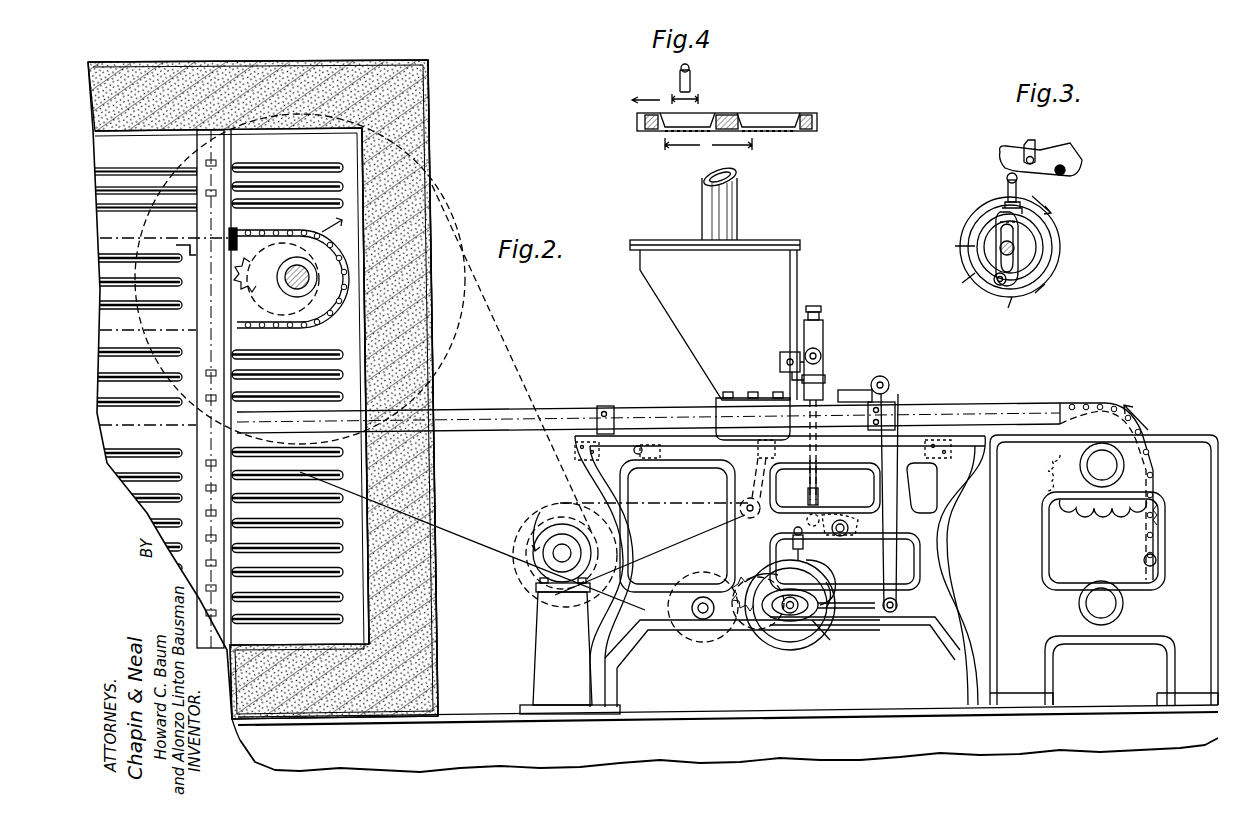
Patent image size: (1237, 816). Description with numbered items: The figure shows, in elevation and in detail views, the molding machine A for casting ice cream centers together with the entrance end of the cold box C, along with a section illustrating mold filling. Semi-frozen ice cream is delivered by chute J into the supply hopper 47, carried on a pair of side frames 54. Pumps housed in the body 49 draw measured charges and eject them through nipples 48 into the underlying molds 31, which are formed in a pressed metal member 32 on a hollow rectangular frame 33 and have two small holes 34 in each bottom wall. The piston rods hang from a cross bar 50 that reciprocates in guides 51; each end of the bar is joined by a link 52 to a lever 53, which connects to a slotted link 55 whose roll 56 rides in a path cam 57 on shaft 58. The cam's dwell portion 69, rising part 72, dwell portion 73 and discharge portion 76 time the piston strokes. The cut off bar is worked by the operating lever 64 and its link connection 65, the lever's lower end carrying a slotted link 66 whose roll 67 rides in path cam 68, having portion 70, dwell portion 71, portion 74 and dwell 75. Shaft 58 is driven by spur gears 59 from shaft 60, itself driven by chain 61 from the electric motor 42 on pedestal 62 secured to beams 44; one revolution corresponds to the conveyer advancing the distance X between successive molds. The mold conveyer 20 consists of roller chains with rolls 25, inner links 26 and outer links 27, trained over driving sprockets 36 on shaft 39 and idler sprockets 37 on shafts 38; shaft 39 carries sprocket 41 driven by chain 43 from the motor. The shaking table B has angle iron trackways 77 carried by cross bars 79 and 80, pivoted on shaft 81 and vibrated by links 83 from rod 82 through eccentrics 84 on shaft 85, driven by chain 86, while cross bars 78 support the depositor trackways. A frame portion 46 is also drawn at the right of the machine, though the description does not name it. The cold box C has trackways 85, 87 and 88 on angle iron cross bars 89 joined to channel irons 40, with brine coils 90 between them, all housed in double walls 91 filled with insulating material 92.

In FIG. 2, the mold conveyer 20 is at (325, 318).
In FIG. 2, the rolls of the chains 25 is at (1140, 545).
In FIG. 2, the pairs of inner links 26 is at (1156, 556).
In FIG. 2, the pairs of outer links 27 is at (1157, 536).
In FIG. 4, the molds 31 is at (708, 112).
In FIG. 4, the pressed metal member 32 is at (652, 133).
In FIG. 4, the hollow rectangular frame 33 is at (812, 118).
In FIG. 4, the small holes 34 is at (662, 141).
In FIG. 2, the driving sprocket 36 is at (276, 282).
In FIG. 2, the idler sprockets 37 is at (1106, 515).
In FIG. 2, the shafts 38 is at (1102, 465).
In FIG. 2, the shaft 39 is at (298, 276).
In FIG. 2, the upstanding channel irons 40 is at (246, 636).
In FIG. 2, the sprocket 41 is at (461, 342).
In FIG. 2, the electric motor 42 is at (565, 566).
In FIG. 2, the chain 43 is at (508, 330).
In FIG. 2, the beams 44 is at (725, 738).
In FIG. 2, the right frame 46 is at (1104, 570).
In FIG. 2, the supply hopper 47 is at (715, 320).
In FIG. 4, the nipples 48 is at (690, 74).
In FIG. 2, the body 49 is at (822, 372).
In FIG. 2, the cross bar 50 is at (823, 334).
In FIG. 2, the guides 51 is at (823, 348).
In FIG. 2, the link 52 is at (818, 478).
In FIG. 3, the link 52 is at (1027, 140).
In FIG. 2, the lever 53 is at (848, 512).
In FIG. 3, the lever 53 is at (1055, 150).
In FIG. 2, the side frames 54 is at (945, 532).
In FIG. 2, the link 55 is at (804, 548).
In FIG. 3, the link 55 is at (1005, 196).
In FIG. 3, the roll 56 is at (1000, 298).
In FIG. 3, the path cam 57 is at (1040, 275).
In FIG. 2, the shaft 58 is at (775, 645).
In FIG. 3, the shaft 58 is at (1002, 248).
In FIG. 2, the spur gears 59 is at (746, 642).
In FIG. 2, the shaft 60 is at (703, 644).
In FIG. 2, the chain 61 is at (640, 642).
In FIG. 2, the pedestal 62 is at (570, 646).
In FIG. 2, the operating lever 64 is at (900, 478).
In FIG. 2, the link connection 65 is at (862, 392).
In FIG. 2, the link 66 is at (880, 624).
In FIG. 2, the roll 67 is at (830, 606).
In FIG. 2, the path cam 68 is at (790, 642).
In FIG. 3, the dwell portion 69 is at (1058, 220).
In FIG. 2, the portion of cam 70 is at (808, 562).
In FIG. 2, the dwell portion 71 is at (757, 572).
In FIG. 3, the part of cam 72 is at (970, 208).
In FIG. 3, the dwell portion 73 is at (960, 270).
In FIG. 2, the portion of cam 74 is at (838, 628).
In FIG. 2, the dwell 75 is at (832, 584).
In FIG. 3, the portion of cam 76 is at (1028, 296).
In FIG. 2, the angle iron trackways 77 is at (664, 408).
In FIG. 2, the cross bars 78 is at (736, 450).
In FIG. 2, the cross bar 79 is at (681, 453).
In FIG. 2, the cross bar 80 is at (772, 450).
In FIG. 2, the shaft 81 is at (643, 451).
In FIG. 2, the rod 82 is at (757, 450).
In FIG. 2, the links 83 is at (751, 478).
In FIG. 2, the eccentrics 84 is at (750, 525).
In FIG. 2, the shaft 85 is at (470, 408).
In FIG. 2, the chain 86 is at (606, 406).
In FIG. 2, the trackways 87 is at (186, 324).
In FIG. 2, the trackways 88 is at (102, 238).
In FIG. 2, the angle iron cross bars 89 is at (219, 249).
In FIG. 2, the brine coils 90 is at (328, 186).
In FIG. 2, the double walls 91 is at (428, 62).
In FIG. 2, the insulating material 92 is at (428, 105).
In FIG. 2, the molding machine A is at (838, 301).
In FIG. 2, the shaking table B is at (687, 396).
In FIG. 2, the cold box C is at (250, 62).
In FIG. 2, the chute J is at (738, 198).
In FIG. 4, the distance x X is at (708, 145).